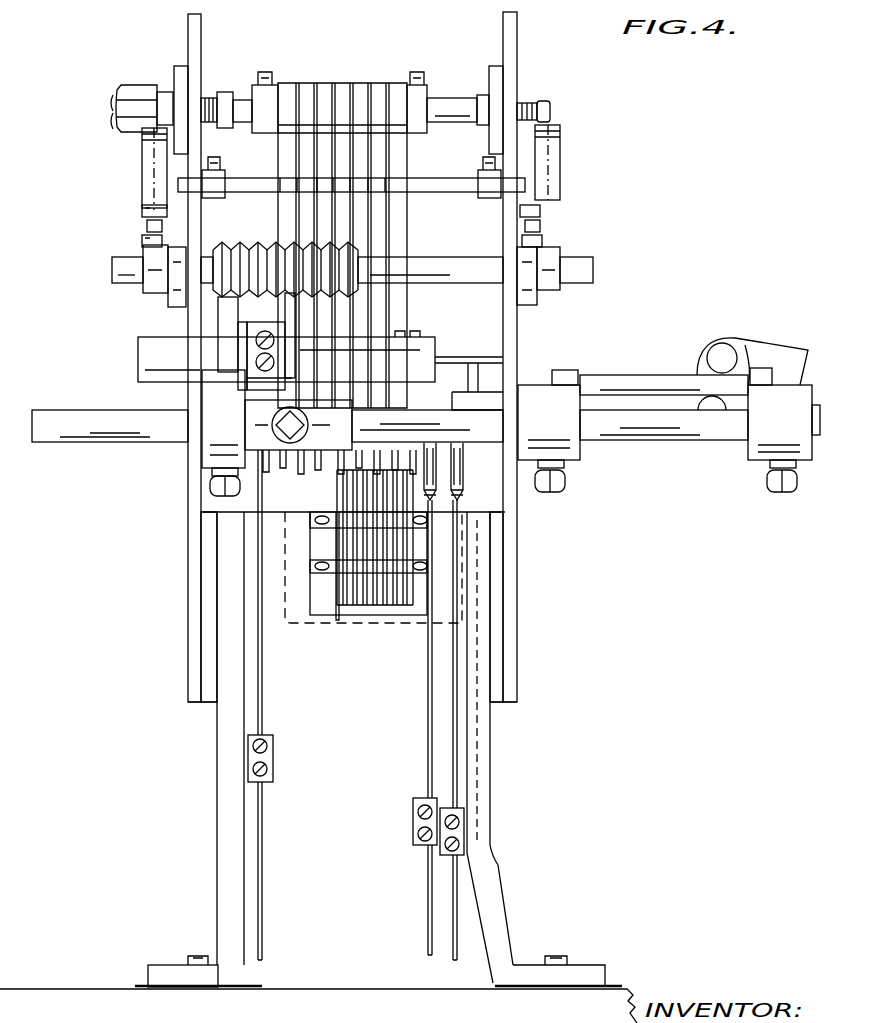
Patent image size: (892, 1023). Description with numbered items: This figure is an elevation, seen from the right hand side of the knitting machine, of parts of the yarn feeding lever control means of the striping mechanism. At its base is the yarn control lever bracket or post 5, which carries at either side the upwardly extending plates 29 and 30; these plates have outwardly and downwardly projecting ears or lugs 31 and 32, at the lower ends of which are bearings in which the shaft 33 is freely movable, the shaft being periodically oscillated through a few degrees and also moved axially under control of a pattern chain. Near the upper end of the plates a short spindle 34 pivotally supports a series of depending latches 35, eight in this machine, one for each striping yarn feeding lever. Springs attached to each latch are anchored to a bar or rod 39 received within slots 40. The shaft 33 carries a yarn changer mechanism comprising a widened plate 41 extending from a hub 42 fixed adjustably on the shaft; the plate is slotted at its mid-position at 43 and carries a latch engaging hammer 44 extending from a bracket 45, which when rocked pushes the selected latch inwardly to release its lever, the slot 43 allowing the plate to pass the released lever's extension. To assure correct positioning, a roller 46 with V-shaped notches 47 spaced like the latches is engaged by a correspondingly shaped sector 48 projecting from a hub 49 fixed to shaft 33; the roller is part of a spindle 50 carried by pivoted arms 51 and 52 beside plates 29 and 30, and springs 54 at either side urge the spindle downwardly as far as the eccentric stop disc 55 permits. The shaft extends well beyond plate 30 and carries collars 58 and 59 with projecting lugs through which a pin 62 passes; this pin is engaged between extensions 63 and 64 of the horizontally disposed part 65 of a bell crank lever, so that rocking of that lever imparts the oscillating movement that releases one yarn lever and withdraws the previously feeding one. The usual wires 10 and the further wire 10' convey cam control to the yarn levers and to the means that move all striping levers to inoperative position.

The yarn control lever bracket or post 5 is at (490, 781).
The wires 10 is at (374, 701).
The wire 10' is at (272, 705).
The plate 29 is at (189, 494).
The plate 30 is at (517, 530).
The ear or lug 31 is at (188, 399).
The ear or lug 32 is at (518, 373).
The shaft 33 is at (102, 414).
The short spindle 34 is at (462, 92).
The depending latches 35 is at (404, 153).
The bar or rod 39 is at (266, 184).
The slots 40 is at (505, 176).
The widened plate 41 is at (407, 343).
The hub 42 is at (374, 437).
The slot or notch 43 is at (294, 376).
The latch engaging hammer 44 is at (282, 316).
The bracket 45 is at (283, 352).
The roller 46 is at (227, 246).
The V-shaped notches 47 is at (248, 342).
The sector 48 is at (218, 317).
The hub 49 is at (223, 433).
The spindle 50 is at (421, 269).
The arm 51 is at (165, 290).
The arm 52 is at (538, 292).
The springs 54 is at (144, 148).
The eccentric stop disc 55 is at (180, 222).
The collar 58 is at (549, 431).
The collar 59 is at (784, 430).
The pin 62 is at (654, 382).
The extension 63 is at (722, 350).
The extension 64 is at (710, 416).
The horizontally disposed part of bell crank lever 65 is at (810, 350).